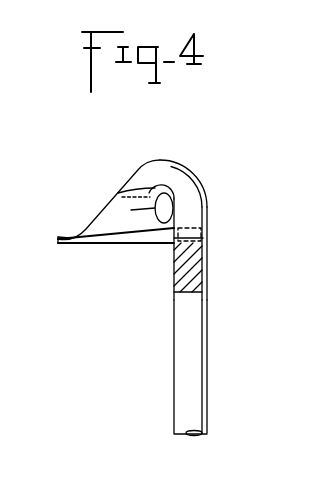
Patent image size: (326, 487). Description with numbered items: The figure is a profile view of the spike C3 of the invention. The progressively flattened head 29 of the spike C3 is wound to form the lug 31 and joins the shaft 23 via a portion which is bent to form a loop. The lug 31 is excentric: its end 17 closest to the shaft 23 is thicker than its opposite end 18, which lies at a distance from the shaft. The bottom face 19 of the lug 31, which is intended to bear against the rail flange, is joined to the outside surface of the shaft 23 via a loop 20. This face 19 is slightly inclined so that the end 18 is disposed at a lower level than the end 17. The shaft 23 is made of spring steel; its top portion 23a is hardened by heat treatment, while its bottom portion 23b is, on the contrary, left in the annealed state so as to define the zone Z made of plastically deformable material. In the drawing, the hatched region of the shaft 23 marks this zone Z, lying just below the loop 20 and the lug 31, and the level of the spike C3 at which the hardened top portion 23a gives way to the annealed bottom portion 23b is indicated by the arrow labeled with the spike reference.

The progressively flattened head 29 is at (139, 163).
The top portion 23a is at (189, 174).
The shaft 23 is at (183, 298).
The bottom portion 23b is at (188, 414).
The loop 20 is at (132, 199).
The end 17 is at (209, 229).
The zone Z is at (190, 252).
The end 18 is at (55, 245).
The bottom face 19 is at (131, 244).
The lug 31 is at (108, 242).
The spike C3 is at (207, 293).